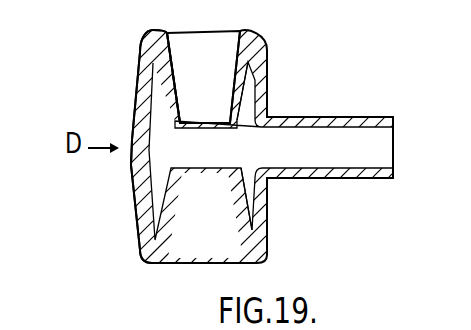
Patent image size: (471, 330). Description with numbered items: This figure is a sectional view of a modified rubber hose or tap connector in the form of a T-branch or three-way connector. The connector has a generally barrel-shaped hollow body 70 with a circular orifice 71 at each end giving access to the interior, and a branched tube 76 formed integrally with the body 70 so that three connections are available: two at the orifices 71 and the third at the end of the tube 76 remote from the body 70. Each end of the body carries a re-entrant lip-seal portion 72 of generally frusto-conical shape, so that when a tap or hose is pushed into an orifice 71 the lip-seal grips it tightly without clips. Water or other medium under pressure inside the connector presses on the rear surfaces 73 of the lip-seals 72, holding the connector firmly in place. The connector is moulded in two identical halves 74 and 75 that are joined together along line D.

The hollow body 70 is at (137, 172).
The orifice 71 is at (215, 43).
The re-entrant lip-seal portion 72 is at (164, 77).
The rear surfaces of lip-seals 73 is at (242, 92).
The identical half 74 is at (136, 214).
The identical half 75 is at (128, 103).
The branched tube 76 is at (360, 92).